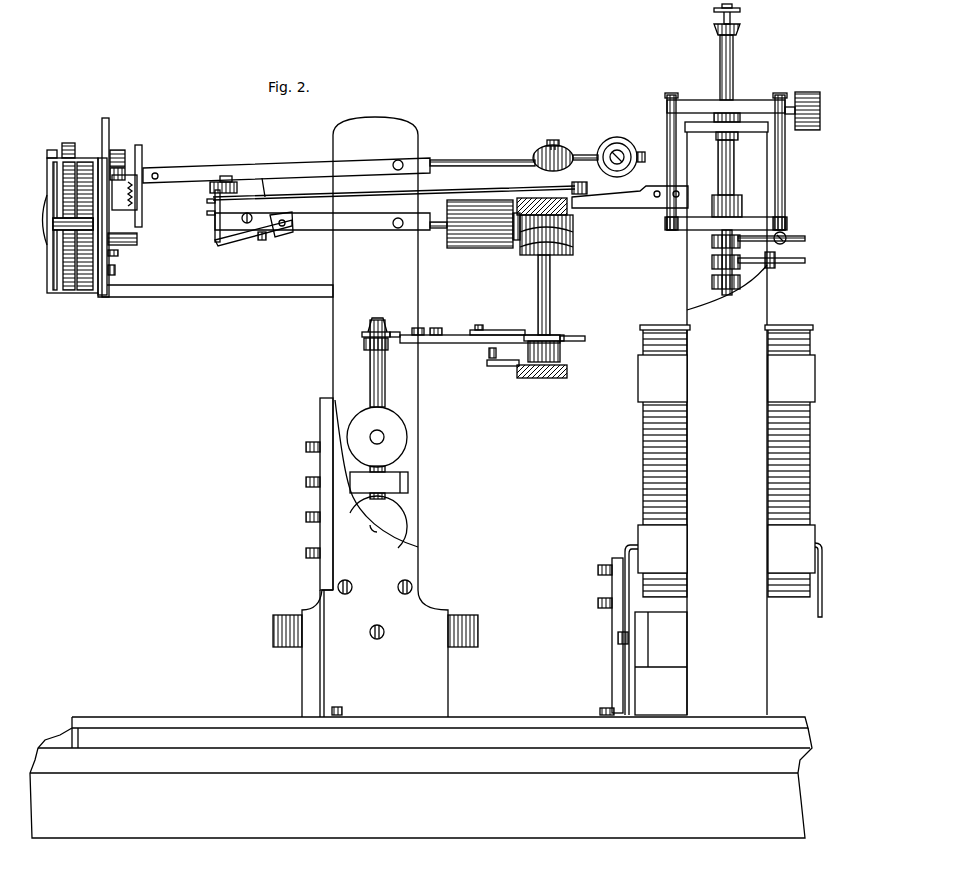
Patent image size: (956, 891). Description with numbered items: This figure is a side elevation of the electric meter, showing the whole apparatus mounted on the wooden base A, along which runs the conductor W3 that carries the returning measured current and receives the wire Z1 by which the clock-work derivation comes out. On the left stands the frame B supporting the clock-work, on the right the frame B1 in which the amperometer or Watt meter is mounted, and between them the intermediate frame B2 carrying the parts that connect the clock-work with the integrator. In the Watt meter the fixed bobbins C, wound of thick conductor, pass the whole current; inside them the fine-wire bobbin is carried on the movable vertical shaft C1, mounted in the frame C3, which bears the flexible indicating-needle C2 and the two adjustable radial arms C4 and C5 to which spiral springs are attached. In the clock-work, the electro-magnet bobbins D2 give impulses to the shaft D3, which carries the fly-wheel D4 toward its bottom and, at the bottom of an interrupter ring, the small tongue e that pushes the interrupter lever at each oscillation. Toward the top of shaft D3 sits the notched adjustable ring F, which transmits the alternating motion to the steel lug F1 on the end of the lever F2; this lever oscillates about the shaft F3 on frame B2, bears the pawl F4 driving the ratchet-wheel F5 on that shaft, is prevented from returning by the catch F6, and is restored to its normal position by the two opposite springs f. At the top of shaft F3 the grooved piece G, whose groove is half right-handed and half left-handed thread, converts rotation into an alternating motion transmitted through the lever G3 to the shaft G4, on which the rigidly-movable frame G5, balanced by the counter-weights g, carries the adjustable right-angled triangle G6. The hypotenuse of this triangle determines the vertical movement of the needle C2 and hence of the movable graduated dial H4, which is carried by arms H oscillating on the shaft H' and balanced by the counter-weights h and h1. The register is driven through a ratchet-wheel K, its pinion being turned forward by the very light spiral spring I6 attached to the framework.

The wooden base A is at (421, 777).
The conductor W3 is at (525, 709).
The frame B is at (212, 300).
The wire Z1 is at (322, 662).
The fly-wheel D4 is at (363, 631).
The shaft of the clock-work D3 is at (385, 362).
The adjustable ring F is at (362, 343).
The electro-magnet bobbins D2 is at (377, 477).
The tongue e is at (379, 482).
The arms H is at (339, 168).
The shaft H' is at (399, 153).
The movable graduated dial H4 is at (230, 180).
The counter-weights h is at (565, 150).
The counter-weights h1 is at (615, 138).
The indicating-needle C2 is at (298, 199).
The right-angled triangle G6 is at (245, 218).
The rigidly-movable frame G5 is at (318, 228).
The shaft G4 is at (397, 229).
The lever G3 is at (439, 230).
The counter-weights g is at (463, 240).
The grooved piece G is at (573, 245).
The intermediate frame B2 is at (568, 212).
The shaft F3 is at (554, 284).
The lever F2 is at (452, 343).
The steel lug F1 is at (396, 333).
The pawl F4 is at (490, 331).
The ratchet-wheel F5 is at (576, 329).
The catch F6 is at (555, 335).
The springs f is at (489, 352).
The frame C3 is at (748, 102).
The frame B1 is at (726, 418).
The movable vertical shaft C1 is at (718, 170).
The radial arm C4 is at (785, 236).
The radial arm C5 is at (784, 263).
The fixed bobbins C is at (710, 520).
The ratchet-wheel K is at (102, 122).
The spiral spring I6 is at (137, 202).